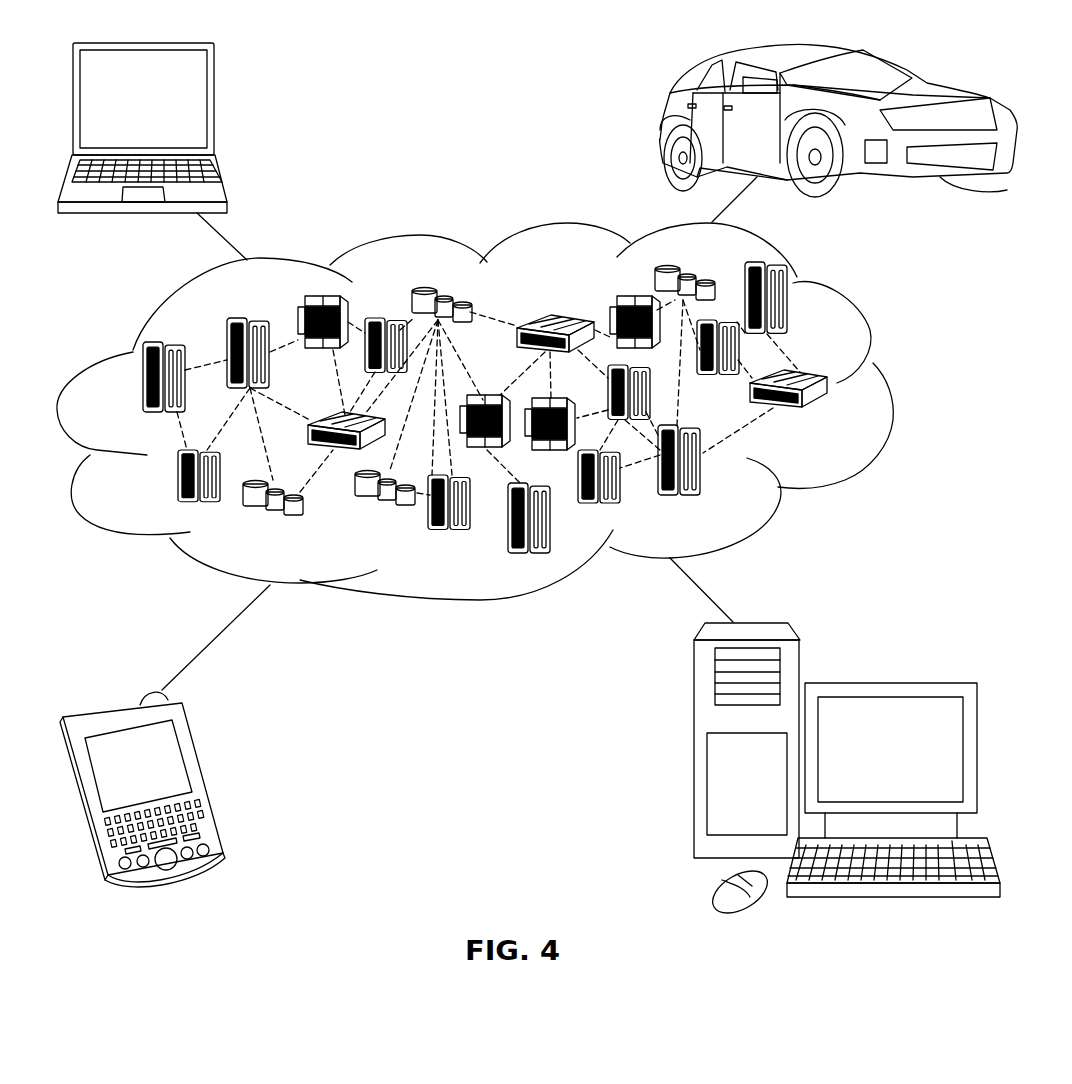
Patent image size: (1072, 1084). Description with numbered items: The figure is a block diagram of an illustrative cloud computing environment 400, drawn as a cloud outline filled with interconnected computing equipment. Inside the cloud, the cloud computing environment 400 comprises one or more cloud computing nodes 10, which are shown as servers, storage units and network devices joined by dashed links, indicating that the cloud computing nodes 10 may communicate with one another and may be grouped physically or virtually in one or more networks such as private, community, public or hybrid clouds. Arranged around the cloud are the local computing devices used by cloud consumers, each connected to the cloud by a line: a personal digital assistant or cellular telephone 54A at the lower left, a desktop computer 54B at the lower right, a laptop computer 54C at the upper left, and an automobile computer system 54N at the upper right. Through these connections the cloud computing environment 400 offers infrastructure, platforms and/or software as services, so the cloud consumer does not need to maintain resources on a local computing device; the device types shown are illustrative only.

The cloud computing node 10 is at (830, 419).
The cloud computing environment 400 is at (887, 387).
The personal digital assistant or cellular telephone 54A is at (203, 778).
The desktop computer 54B is at (887, 682).
The laptop computer 54C is at (213, 107).
The automobile computer system 54N is at (662, 122).